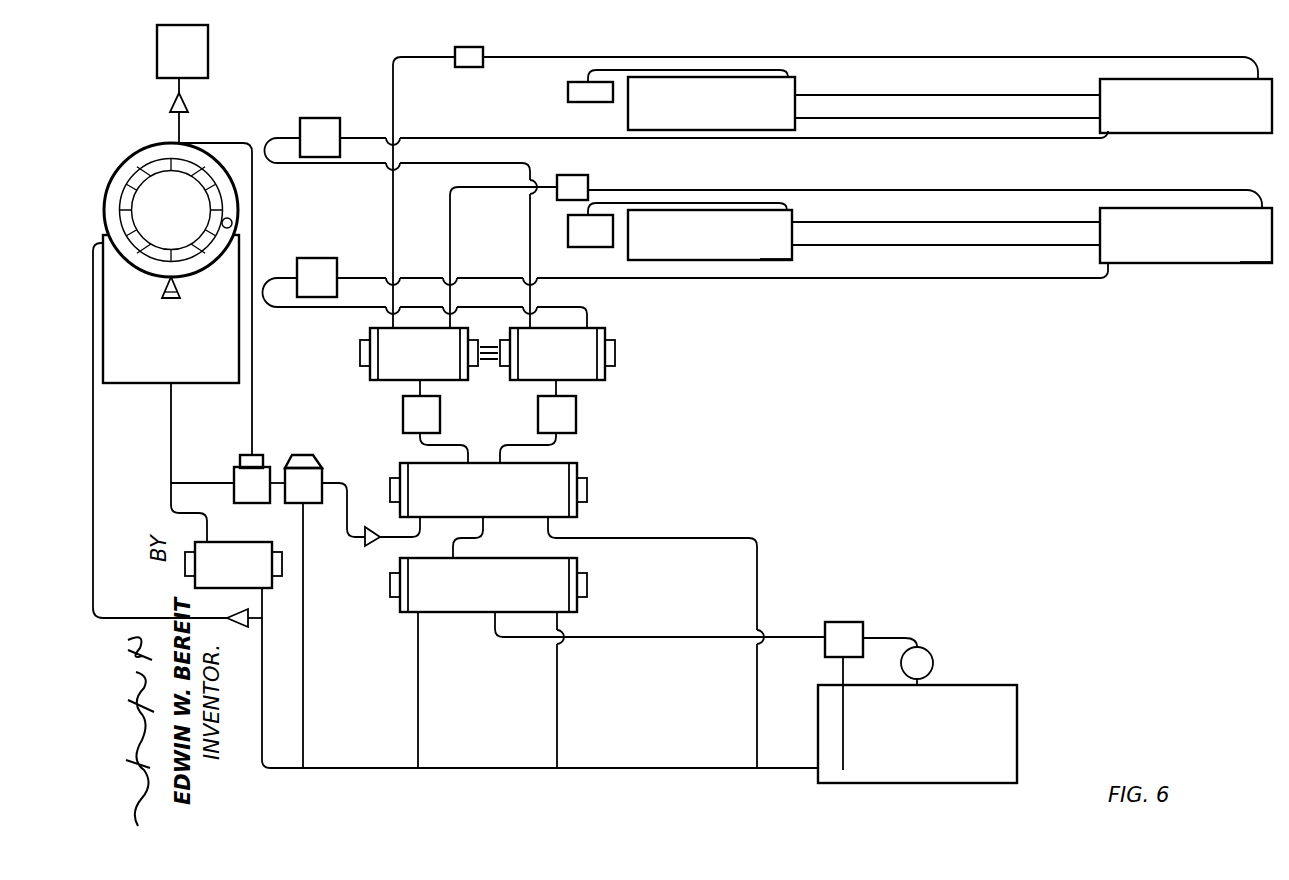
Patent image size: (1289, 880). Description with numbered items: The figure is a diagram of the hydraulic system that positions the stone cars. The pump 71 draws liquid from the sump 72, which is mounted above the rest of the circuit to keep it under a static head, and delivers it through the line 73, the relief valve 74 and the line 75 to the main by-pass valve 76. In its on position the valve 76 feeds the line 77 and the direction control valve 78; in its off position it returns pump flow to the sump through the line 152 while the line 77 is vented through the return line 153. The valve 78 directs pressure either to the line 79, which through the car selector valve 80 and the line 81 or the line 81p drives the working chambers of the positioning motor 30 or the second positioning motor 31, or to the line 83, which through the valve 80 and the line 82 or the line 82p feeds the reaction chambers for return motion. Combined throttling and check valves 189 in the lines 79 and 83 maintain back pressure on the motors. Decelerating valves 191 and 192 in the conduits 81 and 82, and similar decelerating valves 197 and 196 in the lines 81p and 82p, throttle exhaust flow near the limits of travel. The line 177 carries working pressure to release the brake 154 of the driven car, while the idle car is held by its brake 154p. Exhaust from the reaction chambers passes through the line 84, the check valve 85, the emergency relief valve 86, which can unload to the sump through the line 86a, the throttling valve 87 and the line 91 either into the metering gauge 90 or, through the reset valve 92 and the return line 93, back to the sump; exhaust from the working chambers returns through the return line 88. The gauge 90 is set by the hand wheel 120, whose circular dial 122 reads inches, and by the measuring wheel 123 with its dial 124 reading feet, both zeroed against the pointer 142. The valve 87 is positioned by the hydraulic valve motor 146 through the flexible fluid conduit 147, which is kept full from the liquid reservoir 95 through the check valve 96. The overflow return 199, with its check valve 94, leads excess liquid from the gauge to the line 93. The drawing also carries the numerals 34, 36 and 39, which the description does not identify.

The hydraulic positioning motor 30 is at (1171, 269).
The second positioning motor 31 is at (1171, 139).
The hydraulic cylinder 34 is at (792, 255).
The jaw member 36 is at (1248, 258).
The piston rod 39 is at (975, 241).
The pump 71 is at (925, 667).
The sump 72 is at (1002, 742).
The line 73 is at (901, 636).
The relief valve 74 is at (844, 622).
The line 75 is at (787, 633).
The main by-pass valve 76 is at (400, 606).
The line 77 is at (484, 530).
The direction control valve 78 is at (556, 472).
The line 79 is at (560, 390).
The car selector valve 80 is at (395, 369).
The line 81 is at (577, 306).
The line 81p is at (530, 238).
The line 82 is at (450, 243).
The line 82p is at (393, 236).
The line 83 is at (405, 437).
The line 84 is at (181, 484).
The check valve 85 is at (366, 549).
The emergency relief valve 86 is at (314, 456).
The line 86a is at (303, 728).
The throttling valve 87 is at (257, 500).
The return line 88 is at (681, 538).
The metering gauge 90 is at (258, 372).
The line 91 is at (170, 437).
The reset valve 92 is at (204, 585).
The return line 93 is at (296, 770).
The check valve 94 is at (248, 612).
The liquid reservoir 95 is at (208, 50).
The check valve 96 is at (190, 102).
The hand wheel 120 is at (165, 146).
The circular dial 122 is at (126, 159).
The measuring wheel 123 is at (143, 172).
The dial 124 is at (232, 198).
The pointer 142 is at (172, 300).
The hydraulic valve motor 146 is at (258, 458).
The flexible fluid conduit 147 is at (254, 328).
The line 152 is at (557, 738).
The return line 153 is at (418, 718).
The brake 154 is at (572, 248).
The brake 154p is at (584, 104).
The line 177 is at (690, 208).
The combined throttling and check valve 189 is at (538, 415).
The decelerating valve 191 is at (312, 264).
The decelerating valve 192 is at (584, 177).
The decelerating valve 196 is at (466, 68).
The decelerating valve 197 is at (314, 124).
The overflow return 199 is at (93, 529).